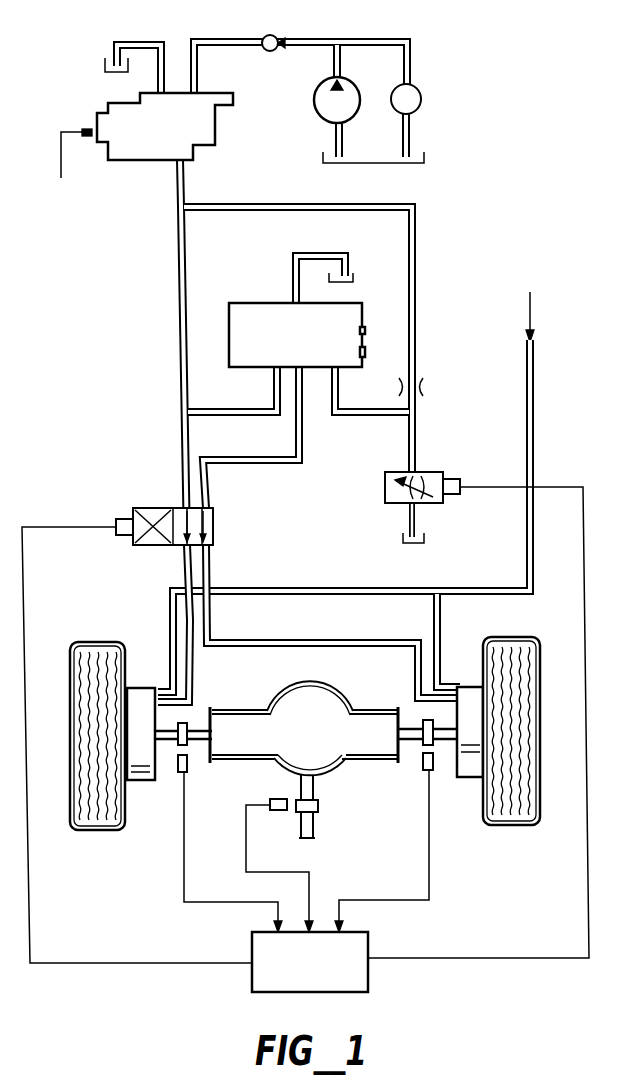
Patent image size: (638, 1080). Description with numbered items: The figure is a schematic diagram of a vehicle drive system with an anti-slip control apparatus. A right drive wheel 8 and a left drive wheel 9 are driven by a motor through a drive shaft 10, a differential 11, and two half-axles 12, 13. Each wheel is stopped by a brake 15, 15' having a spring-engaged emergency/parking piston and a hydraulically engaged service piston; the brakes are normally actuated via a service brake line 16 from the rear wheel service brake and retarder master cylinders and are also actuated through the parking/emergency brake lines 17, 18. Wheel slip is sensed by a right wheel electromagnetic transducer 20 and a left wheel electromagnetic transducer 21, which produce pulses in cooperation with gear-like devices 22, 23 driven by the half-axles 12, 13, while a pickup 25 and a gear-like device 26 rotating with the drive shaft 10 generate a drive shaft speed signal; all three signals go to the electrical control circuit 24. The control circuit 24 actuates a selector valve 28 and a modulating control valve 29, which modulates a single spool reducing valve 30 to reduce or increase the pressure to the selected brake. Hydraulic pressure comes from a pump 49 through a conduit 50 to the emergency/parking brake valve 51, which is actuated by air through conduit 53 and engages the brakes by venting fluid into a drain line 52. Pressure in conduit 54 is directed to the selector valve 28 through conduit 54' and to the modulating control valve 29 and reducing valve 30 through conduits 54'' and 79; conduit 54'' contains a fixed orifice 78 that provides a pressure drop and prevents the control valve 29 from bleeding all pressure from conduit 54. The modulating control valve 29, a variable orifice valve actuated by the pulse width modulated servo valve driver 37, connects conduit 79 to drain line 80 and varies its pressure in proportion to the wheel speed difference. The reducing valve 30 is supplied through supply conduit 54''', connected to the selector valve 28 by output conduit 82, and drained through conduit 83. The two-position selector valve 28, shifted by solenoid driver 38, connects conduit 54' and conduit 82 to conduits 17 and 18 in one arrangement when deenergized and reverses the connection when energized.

The right drive wheel 8 is at (78, 805).
The left drive wheel 9 is at (530, 803).
The drive shaft 10 is at (314, 828).
The differential 11 is at (305, 712).
The half-axle 12 is at (204, 748).
The half-axle 13 is at (411, 747).
The brake 15 is at (146, 757).
The brake 15' is at (471, 754).
The service brake line 16 is at (527, 560).
The parking/emergency brake line 17 is at (193, 663).
The parking/emergency brake line 18 is at (358, 646).
The right wheel electromagnetic transducer 20 is at (186, 773).
The left wheel electromagnetic transducer 21 is at (429, 772).
The gear-like device 22 is at (186, 722).
The gear-like device 23 is at (423, 720).
The electrical control circuit 24 is at (325, 993).
The pickup 25 is at (280, 812).
The gear-like device 26 is at (318, 806).
The selector valve 28 is at (172, 507).
The modulating control valve 29 is at (437, 472).
The single spool reducing valve 30 is at (230, 345).
The pulse width modulated servo valve driver 37 is at (462, 478).
The solenoid driver 38 is at (120, 519).
The pump 49 is at (314, 103).
The conduit 50 is at (230, 40).
The emergency/parking brake valve 51 is at (218, 144).
The drain line 52 is at (143, 42).
The conduit 53 is at (72, 128).
The conduit 54 is at (205, 183).
The conduit 54' is at (161, 376).
The conduit 54'' is at (298, 339).
The supply conduit 54''' is at (232, 405).
The fixed orifice 78 is at (423, 387).
The conduit 79 is at (373, 414).
The drain line 80 is at (419, 525).
The output conduit 82 is at (267, 464).
The conduit 83 is at (293, 272).